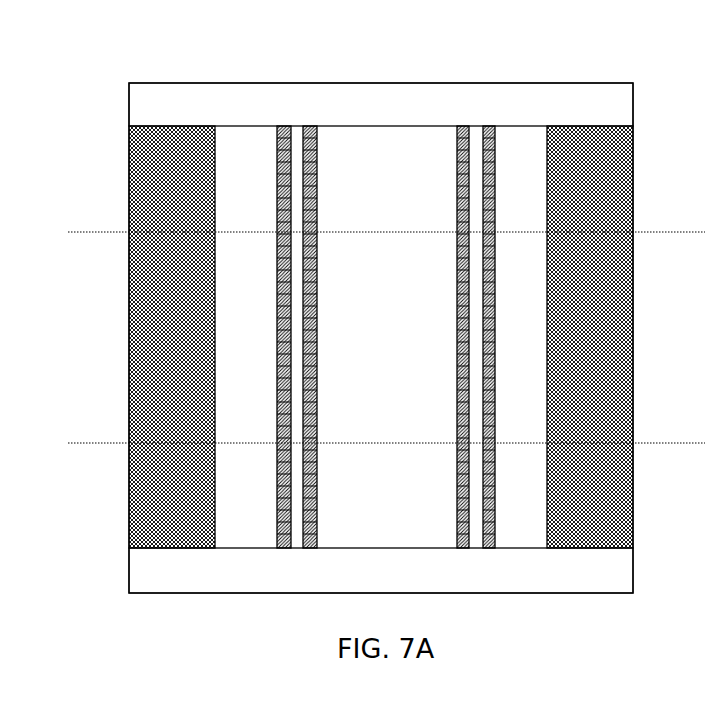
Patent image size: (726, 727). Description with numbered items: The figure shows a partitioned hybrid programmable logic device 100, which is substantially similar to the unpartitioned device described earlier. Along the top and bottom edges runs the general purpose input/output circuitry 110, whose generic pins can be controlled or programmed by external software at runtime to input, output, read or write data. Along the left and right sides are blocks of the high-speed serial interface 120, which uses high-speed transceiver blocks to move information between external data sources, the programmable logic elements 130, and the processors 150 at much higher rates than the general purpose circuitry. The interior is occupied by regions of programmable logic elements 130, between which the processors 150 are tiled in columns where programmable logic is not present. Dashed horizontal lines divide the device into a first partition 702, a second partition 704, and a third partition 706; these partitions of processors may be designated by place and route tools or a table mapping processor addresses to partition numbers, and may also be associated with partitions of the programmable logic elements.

The hybrid programmable logic device 100 is at (394, 55).
The general purpose input/output circuitry 110 is at (397, 111).
The high-speed serial interface 120 is at (189, 346).
The programmable logic elements 130 is at (262, 201).
The processors 150 is at (283, 351).
The first partition 702 is at (703, 171).
The second partition 704 is at (705, 330).
The third partition 706 is at (709, 521).